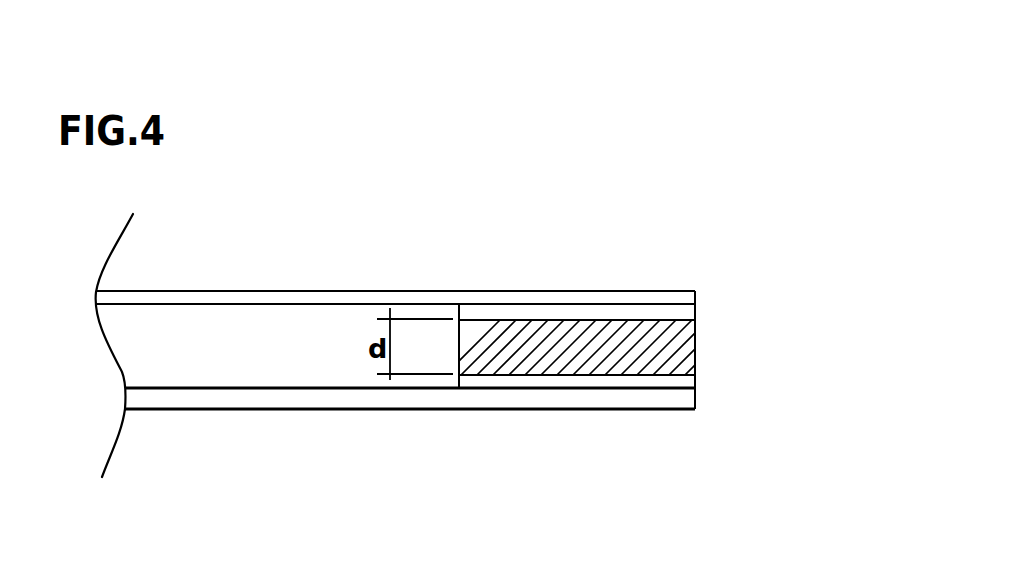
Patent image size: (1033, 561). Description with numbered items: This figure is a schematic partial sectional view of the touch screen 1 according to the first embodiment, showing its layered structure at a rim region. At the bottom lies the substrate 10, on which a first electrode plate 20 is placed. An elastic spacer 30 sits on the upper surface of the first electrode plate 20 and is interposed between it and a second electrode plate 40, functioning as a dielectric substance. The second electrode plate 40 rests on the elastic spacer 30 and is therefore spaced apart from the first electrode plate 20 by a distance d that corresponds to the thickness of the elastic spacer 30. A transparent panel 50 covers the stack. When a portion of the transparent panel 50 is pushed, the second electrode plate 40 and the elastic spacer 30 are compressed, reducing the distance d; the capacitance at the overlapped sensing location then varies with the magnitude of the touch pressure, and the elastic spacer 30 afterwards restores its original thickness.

The touch screen 1 is at (623, 220).
The substrate 10 is at (407, 403).
The first electrode plate 20 is at (687, 383).
The elastic spacer 30 is at (683, 347).
The second electrode plate 40 is at (688, 314).
The transparent panel 50 is at (430, 293).